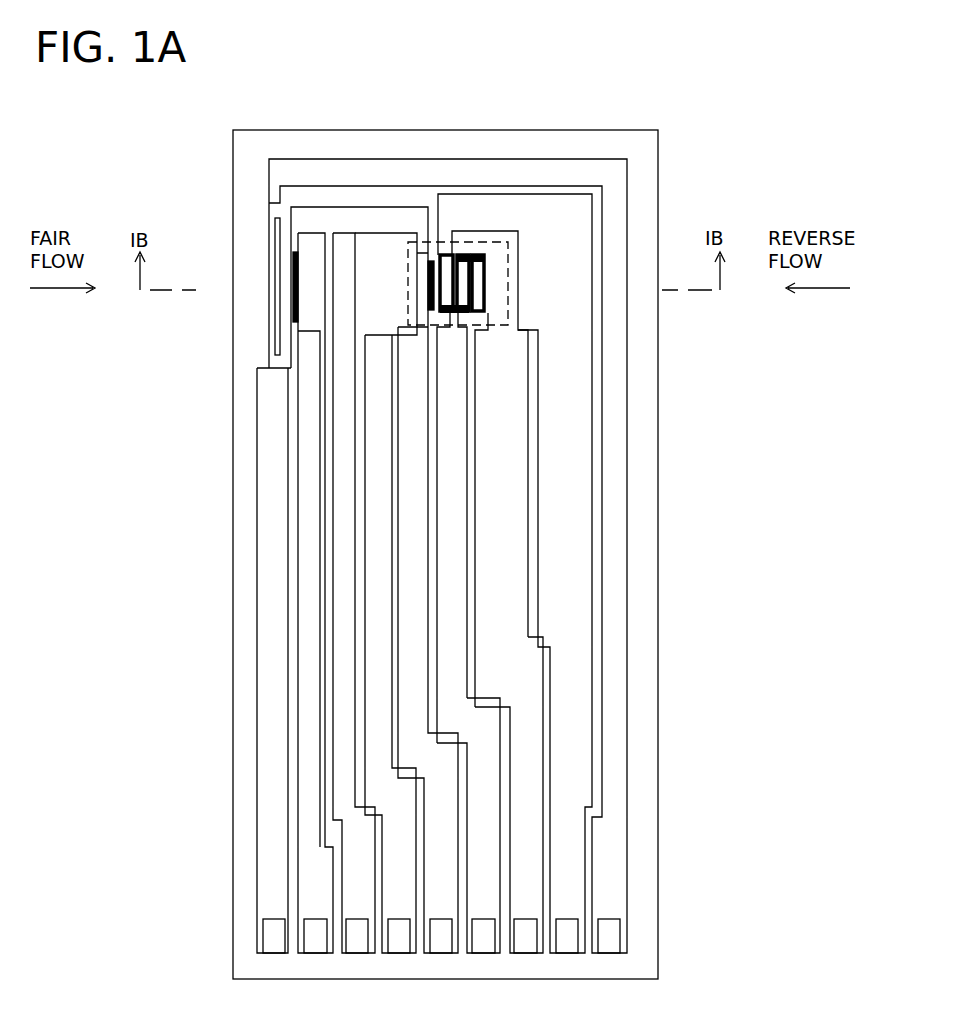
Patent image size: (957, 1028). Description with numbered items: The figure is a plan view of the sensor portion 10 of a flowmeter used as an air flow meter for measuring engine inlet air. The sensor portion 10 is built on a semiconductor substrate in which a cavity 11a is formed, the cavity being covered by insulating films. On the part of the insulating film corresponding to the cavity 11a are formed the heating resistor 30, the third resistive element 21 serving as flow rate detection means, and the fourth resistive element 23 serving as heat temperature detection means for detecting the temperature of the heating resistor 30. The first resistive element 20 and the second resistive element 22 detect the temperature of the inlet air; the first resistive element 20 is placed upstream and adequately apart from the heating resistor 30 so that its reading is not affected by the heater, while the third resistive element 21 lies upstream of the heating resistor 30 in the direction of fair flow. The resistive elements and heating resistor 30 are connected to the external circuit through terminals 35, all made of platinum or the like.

The sensor portion 10 is at (598, 118).
The cavity 11a is at (405, 300).
The first resistive element 20 is at (276, 308).
The third resistive element 21 is at (426, 262).
The second resistive element 22 is at (290, 255).
The fourth resistive element 23 is at (478, 253).
The heating resistor 30 is at (576, 231).
The terminals 35 is at (272, 946).